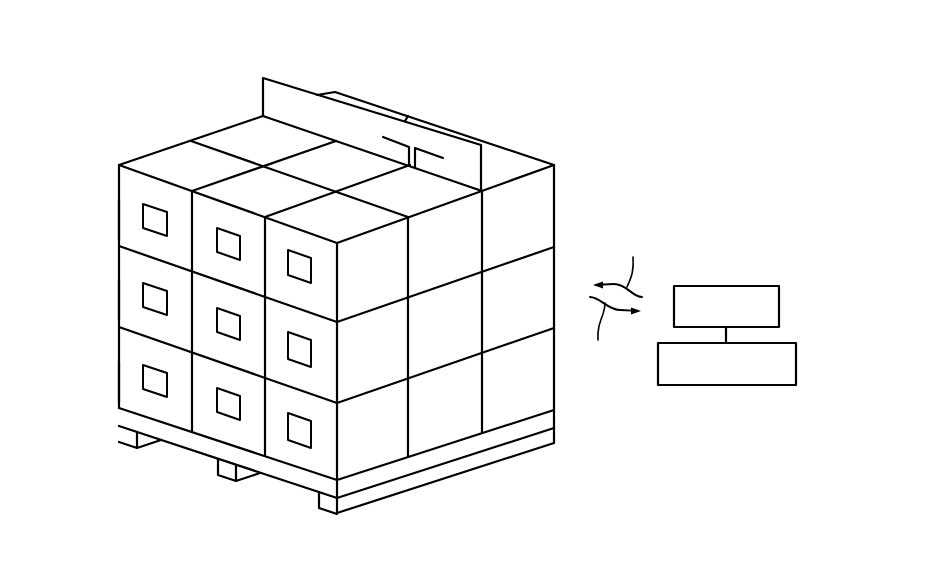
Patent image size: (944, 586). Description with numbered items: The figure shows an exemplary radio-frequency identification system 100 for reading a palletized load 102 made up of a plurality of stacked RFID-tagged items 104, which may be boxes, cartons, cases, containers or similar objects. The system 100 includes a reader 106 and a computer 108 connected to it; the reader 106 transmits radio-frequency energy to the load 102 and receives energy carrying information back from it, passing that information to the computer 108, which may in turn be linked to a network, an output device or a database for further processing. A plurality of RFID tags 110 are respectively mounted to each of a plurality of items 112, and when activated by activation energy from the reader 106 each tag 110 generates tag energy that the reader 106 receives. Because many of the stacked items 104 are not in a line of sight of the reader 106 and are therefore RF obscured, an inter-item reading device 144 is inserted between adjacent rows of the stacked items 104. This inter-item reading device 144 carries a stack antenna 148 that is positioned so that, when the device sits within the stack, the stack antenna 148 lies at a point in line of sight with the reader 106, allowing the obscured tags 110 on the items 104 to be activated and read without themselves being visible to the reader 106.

The radio-frequency identification system 100 is at (613, 114).
The palletized load 102 is at (251, 69).
The RFID-tagged items 104 is at (179, 164).
The reader 106 is at (779, 307).
The computer 108 is at (796, 362).
The RFID tags 110 is at (142, 214).
The items 112 is at (118, 231).
The inter-item reading device 144 is at (302, 90).
The stack antenna 148 is at (428, 148).